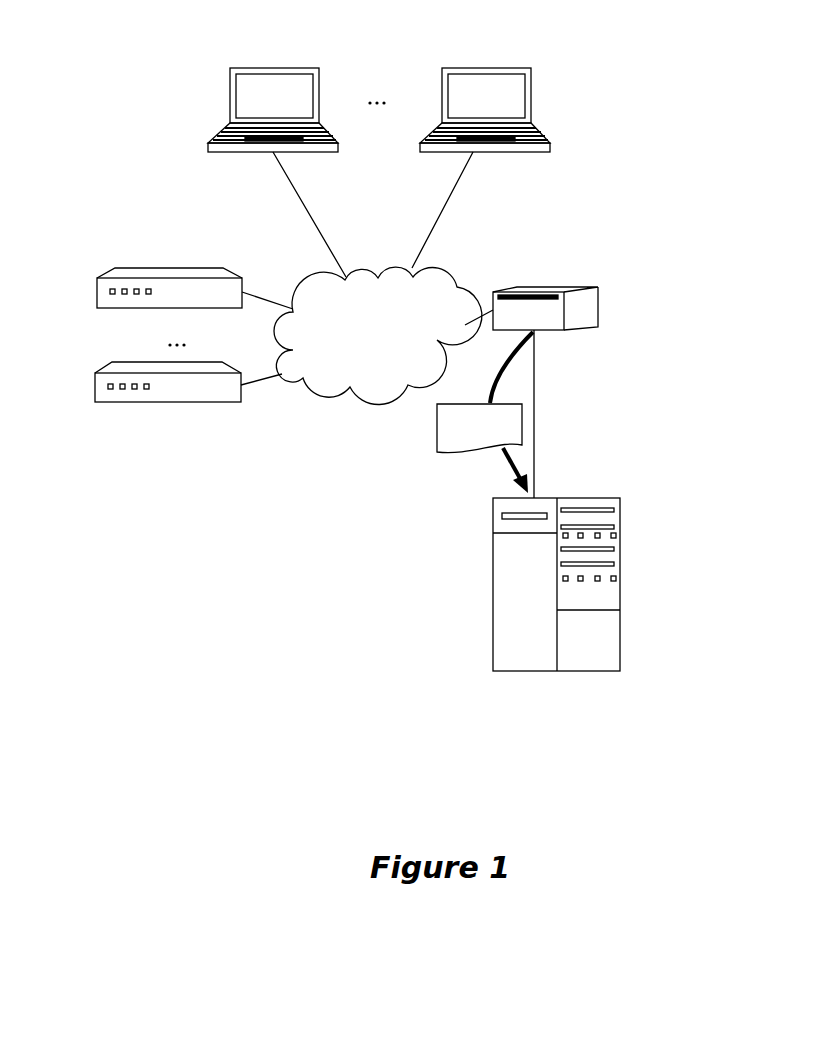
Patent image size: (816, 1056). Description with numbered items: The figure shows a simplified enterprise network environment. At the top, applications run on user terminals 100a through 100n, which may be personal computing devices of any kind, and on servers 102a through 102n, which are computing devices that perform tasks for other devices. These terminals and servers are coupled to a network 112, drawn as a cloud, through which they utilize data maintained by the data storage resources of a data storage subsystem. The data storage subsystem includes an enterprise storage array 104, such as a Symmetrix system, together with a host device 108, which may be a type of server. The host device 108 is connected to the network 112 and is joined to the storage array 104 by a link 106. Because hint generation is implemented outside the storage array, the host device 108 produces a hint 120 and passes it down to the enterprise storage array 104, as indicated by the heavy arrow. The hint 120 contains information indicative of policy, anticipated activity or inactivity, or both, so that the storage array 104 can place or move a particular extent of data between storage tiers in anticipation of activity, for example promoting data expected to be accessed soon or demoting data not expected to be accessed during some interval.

The user terminal 100a is at (282, 67).
The user terminal 100n is at (484, 67).
The server 102a is at (198, 267).
The server 102n is at (142, 362).
The network 112 is at (378, 335).
The host device 108 is at (555, 288).
The communication link 106 is at (534, 392).
The hint 120 is at (438, 433).
The enterprise storage array 104 is at (622, 515).